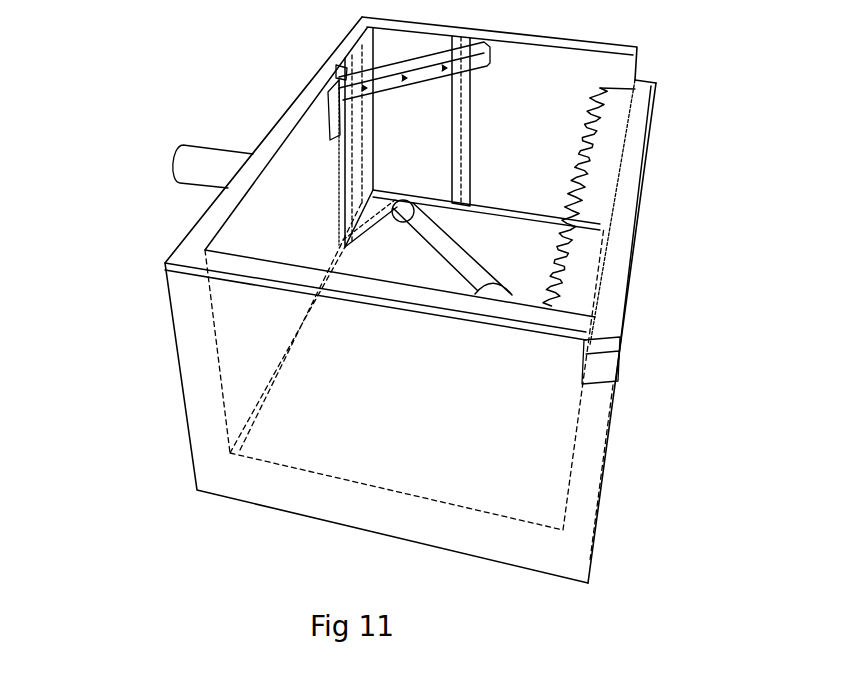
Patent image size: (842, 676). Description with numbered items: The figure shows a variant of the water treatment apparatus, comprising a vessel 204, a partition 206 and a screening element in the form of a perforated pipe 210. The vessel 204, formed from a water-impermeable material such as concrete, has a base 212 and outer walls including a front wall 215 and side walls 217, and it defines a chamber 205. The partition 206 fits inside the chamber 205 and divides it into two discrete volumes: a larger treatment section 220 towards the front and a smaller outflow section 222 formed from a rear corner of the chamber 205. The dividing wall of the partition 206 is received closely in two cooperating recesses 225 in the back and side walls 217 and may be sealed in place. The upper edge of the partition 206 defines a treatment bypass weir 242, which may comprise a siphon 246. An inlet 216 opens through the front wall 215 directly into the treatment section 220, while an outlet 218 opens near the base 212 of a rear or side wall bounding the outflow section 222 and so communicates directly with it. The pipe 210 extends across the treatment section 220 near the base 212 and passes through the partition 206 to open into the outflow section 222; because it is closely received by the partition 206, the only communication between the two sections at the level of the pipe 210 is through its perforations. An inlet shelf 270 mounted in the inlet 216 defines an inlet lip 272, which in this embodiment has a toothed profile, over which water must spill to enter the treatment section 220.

The vessel 204 is at (178, 363).
The chamber 205 is at (313, 250).
The partition 206 is at (443, 127).
The screening element 210 is at (430, 252).
The base 212 is at (400, 425).
The front wall 215 is at (607, 472).
The inlet 216 is at (647, 177).
The side walls 217 is at (598, 44).
The outlet 218 is at (222, 179).
The treatment section 220 is at (520, 254).
The outflow section 222 is at (403, 47).
The recesses 225 is at (343, 67).
The treatment bypass weir 242 is at (352, 146).
The siphon 246 is at (337, 78).
The inlet shelf 270 is at (587, 268).
The inlet lip 272 is at (593, 127).